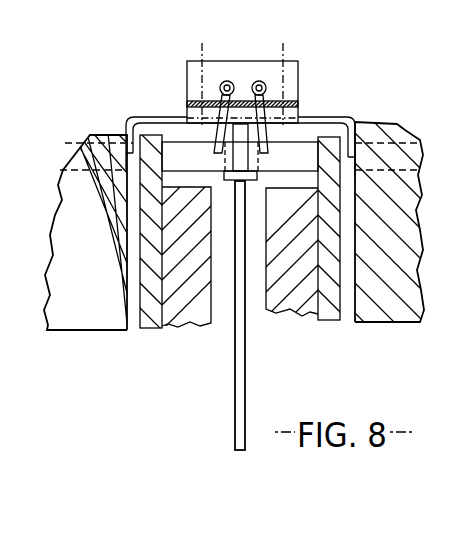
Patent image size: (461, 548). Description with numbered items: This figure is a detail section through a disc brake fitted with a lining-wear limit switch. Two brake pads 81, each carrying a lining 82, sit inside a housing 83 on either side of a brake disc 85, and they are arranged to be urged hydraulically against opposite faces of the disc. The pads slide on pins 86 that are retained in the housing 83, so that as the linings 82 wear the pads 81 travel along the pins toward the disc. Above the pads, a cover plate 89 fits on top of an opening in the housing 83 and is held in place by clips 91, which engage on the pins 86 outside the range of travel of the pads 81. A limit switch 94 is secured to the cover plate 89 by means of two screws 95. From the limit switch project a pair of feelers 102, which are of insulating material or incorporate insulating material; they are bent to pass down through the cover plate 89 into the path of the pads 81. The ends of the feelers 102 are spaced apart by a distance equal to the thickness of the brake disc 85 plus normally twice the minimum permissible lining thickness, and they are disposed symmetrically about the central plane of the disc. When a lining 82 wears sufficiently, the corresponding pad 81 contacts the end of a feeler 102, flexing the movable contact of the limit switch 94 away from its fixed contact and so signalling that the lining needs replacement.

The brake pad 81 is at (148, 332).
The lining 82 is at (187, 327).
The housing 83 is at (392, 323).
The brake disc 85 is at (245, 397).
The pin 86 is at (307, 153).
The cover plate 89 is at (353, 123).
The clip 91 is at (229, 182).
The limit switch 94 is at (298, 74).
The screw 95 is at (200, 52).
The feeler 102 is at (277, 105).